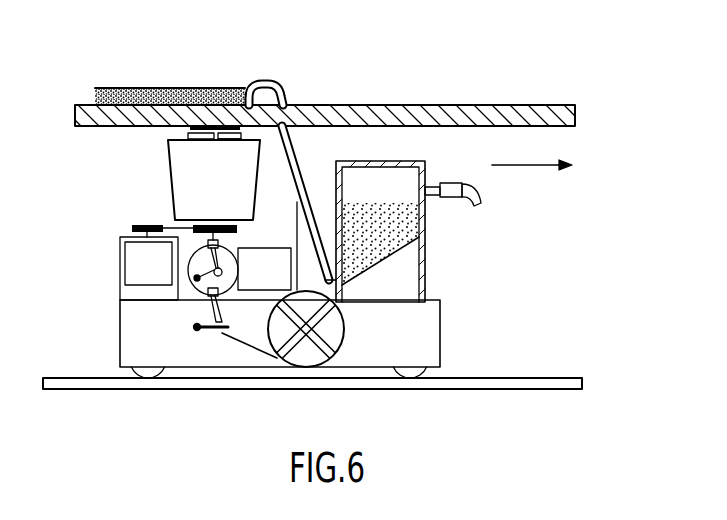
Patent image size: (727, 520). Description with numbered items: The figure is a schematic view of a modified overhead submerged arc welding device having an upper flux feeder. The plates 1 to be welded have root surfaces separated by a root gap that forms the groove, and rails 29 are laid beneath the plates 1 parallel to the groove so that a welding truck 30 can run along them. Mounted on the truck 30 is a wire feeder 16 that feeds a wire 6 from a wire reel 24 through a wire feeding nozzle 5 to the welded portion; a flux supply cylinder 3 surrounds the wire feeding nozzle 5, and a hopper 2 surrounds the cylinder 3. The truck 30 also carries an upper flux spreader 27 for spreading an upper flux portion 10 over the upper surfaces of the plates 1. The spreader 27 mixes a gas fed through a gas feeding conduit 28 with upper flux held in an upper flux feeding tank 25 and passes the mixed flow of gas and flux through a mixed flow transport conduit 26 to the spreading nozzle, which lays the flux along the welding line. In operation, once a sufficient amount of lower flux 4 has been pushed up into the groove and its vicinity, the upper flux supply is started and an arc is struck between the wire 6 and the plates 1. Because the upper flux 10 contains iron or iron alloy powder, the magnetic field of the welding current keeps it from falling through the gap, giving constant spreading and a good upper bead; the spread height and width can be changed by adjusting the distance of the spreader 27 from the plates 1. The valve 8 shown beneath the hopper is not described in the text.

The plates to be welded 1 is at (420, 105).
The hopper 2 is at (172, 176).
The flux supply cylinder 3 is at (228, 139).
The lower flux 4 is at (188, 129).
The wire feeding nozzle 5 is at (214, 140).
The wire 6 is at (222, 339).
The valve 8 is at (232, 236).
The upper flux portion 10 is at (173, 88).
The wire feeder 16 is at (238, 268).
The wire reel 24 is at (340, 338).
The upper flux feeding tank 25 is at (395, 223).
The mixed flow transport conduit 26 is at (298, 160).
The upper flux spreader 27 is at (272, 84).
The gas feeding conduit 28 is at (466, 188).
The rails 29 is at (522, 378).
The welding truck 30 is at (432, 304).